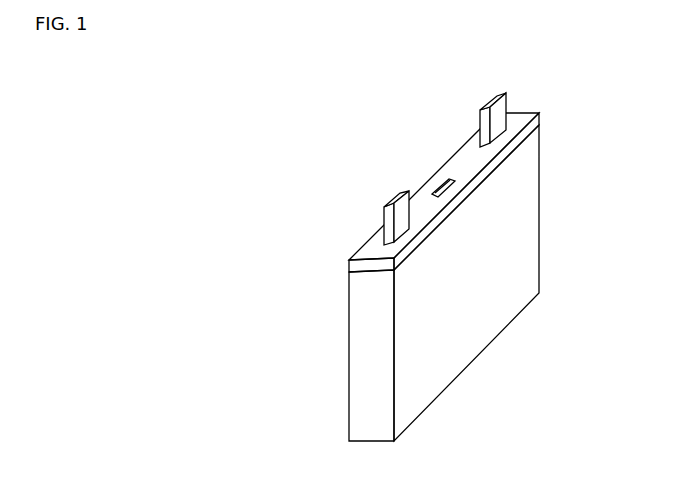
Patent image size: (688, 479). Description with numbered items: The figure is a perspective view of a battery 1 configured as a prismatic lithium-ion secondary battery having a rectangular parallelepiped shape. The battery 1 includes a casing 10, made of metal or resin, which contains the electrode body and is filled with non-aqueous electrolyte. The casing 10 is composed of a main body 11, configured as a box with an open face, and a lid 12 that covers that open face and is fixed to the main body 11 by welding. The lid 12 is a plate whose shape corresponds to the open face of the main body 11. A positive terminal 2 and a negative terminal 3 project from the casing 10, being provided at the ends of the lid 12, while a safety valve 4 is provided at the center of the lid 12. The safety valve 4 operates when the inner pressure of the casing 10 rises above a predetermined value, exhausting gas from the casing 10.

The battery 1 is at (441, 252).
The casing 10 is at (608, 150).
The main body 11 is at (535, 193).
The lid 12 is at (536, 132).
The positive terminal 2 is at (492, 100).
The negative terminal 3 is at (389, 203).
The safety valve 4 is at (446, 182).